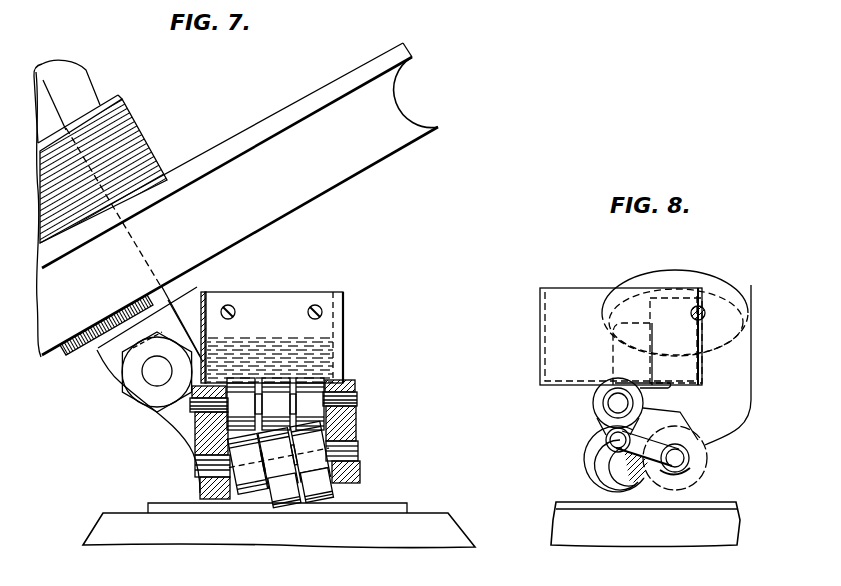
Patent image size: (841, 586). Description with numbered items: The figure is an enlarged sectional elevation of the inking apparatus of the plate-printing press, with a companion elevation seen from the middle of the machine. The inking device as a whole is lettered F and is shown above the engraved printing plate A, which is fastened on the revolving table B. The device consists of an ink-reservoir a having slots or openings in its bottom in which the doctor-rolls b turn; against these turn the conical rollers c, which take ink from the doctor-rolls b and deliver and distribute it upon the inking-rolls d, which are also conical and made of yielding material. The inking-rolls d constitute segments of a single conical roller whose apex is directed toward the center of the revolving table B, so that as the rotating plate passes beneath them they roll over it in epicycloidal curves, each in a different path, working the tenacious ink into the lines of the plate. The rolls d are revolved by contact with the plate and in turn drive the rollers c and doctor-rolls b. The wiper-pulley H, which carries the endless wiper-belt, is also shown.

In FIG. 7, the wiper-pulley H is at (239, 199).
In FIG. 7, the ink-reservoir a is at (272, 337).
In FIG. 8, the ink-reservoir a is at (644, 327).
In FIG. 7, the doctor-rolls b is at (275, 404).
In FIG. 8, the doctor-rolls b is at (596, 403).
In FIG. 7, the conical rollers c is at (279, 458).
In FIG. 8, the conical rollers c is at (602, 466).
In FIG. 7, the inking-rolls d is at (301, 488).
In FIG. 8, the inking-rolls d is at (703, 477).
In FIG. 7, the inking device F is at (150, 390).
In FIG. 8, the inking device F is at (662, 375).
In FIG. 7, the engraved printing plate A is at (387, 509).
In FIG. 7, the revolving table B is at (279, 530).
In FIG. 8, the revolving table B is at (645, 524).